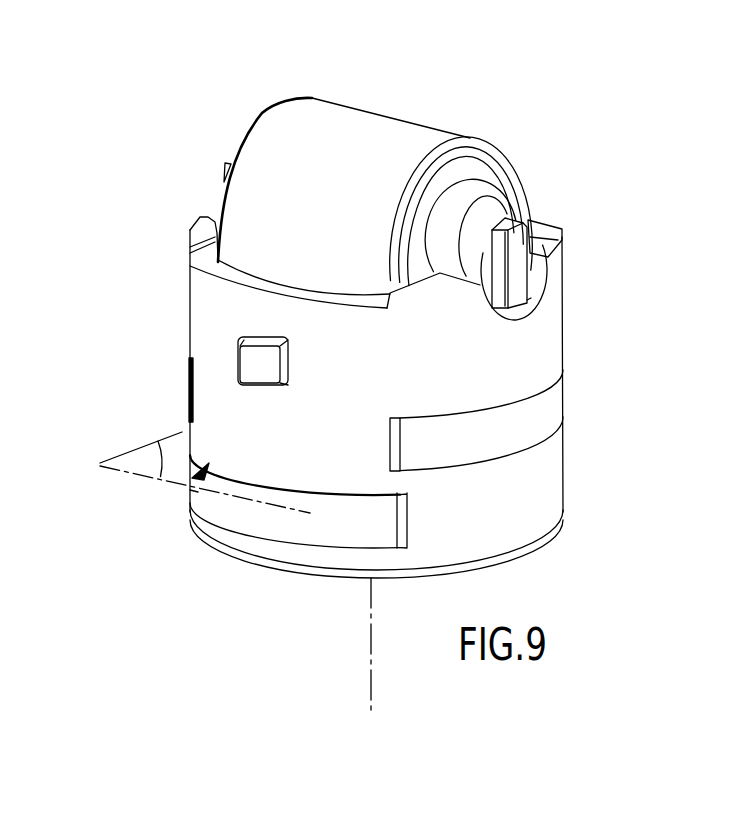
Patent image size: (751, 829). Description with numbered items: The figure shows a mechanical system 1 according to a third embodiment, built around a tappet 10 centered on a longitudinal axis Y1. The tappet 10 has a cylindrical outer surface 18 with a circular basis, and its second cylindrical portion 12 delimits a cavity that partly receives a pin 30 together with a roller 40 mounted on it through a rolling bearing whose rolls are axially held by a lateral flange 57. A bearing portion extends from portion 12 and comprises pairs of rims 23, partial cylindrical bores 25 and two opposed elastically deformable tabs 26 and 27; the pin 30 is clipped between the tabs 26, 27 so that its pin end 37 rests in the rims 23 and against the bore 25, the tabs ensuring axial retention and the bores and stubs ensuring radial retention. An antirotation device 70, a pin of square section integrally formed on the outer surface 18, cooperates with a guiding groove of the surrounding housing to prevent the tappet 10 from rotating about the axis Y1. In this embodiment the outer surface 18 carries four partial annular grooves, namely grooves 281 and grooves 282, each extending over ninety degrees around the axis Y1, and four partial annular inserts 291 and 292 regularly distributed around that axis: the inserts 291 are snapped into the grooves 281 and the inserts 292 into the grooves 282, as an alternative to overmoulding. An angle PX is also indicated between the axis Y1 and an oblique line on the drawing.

The mechanical system 1 is at (592, 162).
The tappet 10 is at (548, 550).
The second cylindrical portion 12 is at (197, 283).
The cylindrical outer surface 18 is at (540, 315).
The rims 23 is at (558, 232).
The partial cylindrical bore 25 is at (549, 262).
The tab 26 is at (226, 163).
The tab 27 is at (517, 279).
The pin 30 is at (468, 212).
The pin end 37 is at (503, 207).
The roller 40 is at (374, 136).
The lateral flange 57 is at (462, 180).
The antirotation device 70 is at (250, 362).
The groove 281 is at (192, 480).
The groove 282 is at (561, 386).
The insert 291 is at (223, 502).
The insert 292 is at (190, 408).
The axis PX is at (205, 472).
The longitudinal axis Y1 is at (370, 658).